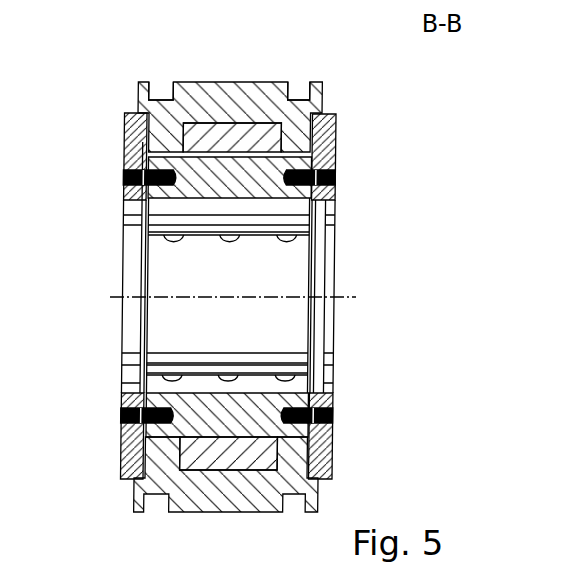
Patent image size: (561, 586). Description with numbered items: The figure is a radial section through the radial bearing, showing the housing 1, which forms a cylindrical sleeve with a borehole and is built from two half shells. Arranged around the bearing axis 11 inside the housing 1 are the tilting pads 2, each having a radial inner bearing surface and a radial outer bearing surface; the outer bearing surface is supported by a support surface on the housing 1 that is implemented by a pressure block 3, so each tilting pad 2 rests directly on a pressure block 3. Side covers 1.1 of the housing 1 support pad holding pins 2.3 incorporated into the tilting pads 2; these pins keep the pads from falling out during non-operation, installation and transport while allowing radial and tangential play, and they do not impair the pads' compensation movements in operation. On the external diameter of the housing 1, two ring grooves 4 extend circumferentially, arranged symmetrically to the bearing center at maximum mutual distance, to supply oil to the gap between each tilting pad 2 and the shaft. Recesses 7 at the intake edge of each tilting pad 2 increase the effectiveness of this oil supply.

The housing 1 is at (265, 87).
The side covers 1.1 is at (130, 128).
The tilting pads 2 is at (213, 170).
The pad holding pins 2.3 is at (335, 175).
The pressure block 3 is at (252, 140).
The ring grooves 4 is at (165, 100).
The recesses 7 is at (170, 239).
The axis of rotation 11 is at (366, 291).